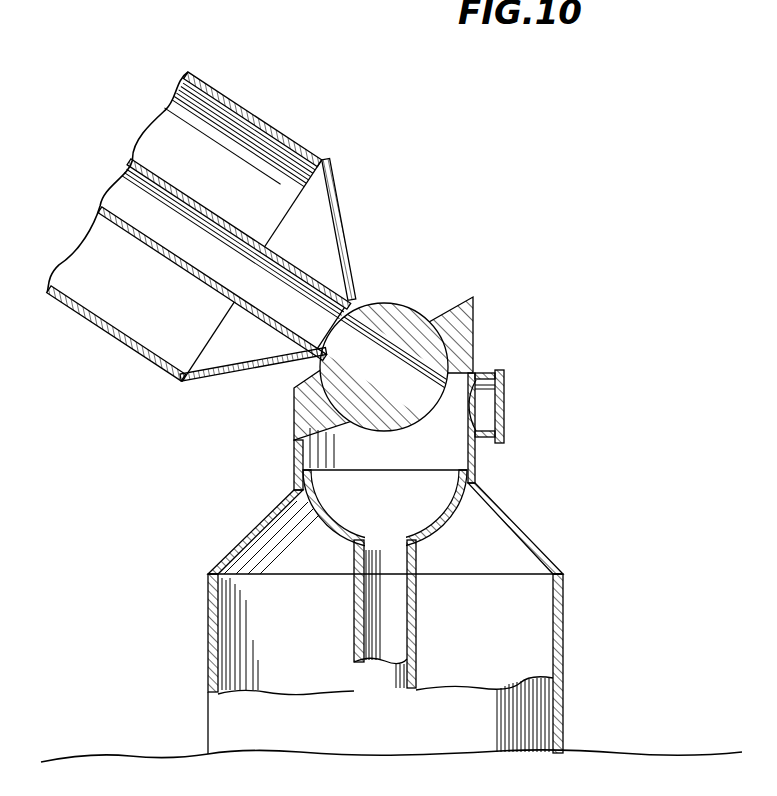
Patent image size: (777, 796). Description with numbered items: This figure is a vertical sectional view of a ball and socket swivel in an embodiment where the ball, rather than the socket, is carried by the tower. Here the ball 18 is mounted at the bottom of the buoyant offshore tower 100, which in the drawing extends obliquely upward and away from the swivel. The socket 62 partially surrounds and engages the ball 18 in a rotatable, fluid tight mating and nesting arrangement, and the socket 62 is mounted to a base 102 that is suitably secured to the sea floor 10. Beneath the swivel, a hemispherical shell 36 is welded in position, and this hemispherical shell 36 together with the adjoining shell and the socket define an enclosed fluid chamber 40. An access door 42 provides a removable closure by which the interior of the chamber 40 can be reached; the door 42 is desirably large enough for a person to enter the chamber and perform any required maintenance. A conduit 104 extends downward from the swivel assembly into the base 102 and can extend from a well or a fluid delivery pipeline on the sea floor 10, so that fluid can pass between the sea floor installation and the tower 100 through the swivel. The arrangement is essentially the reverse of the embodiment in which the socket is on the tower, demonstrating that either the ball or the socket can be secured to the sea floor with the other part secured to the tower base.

The buoyant offshore tower 100 is at (243, 86).
The ball 18 is at (396, 302).
The socket 62 is at (474, 320).
The access door 42 is at (500, 400).
The fluid chamber 40 is at (340, 452).
The hemispherical shell 36 is at (322, 531).
The conduit 104 is at (414, 633).
The base 102 is at (578, 590).
The sea floor 10 is at (618, 748).